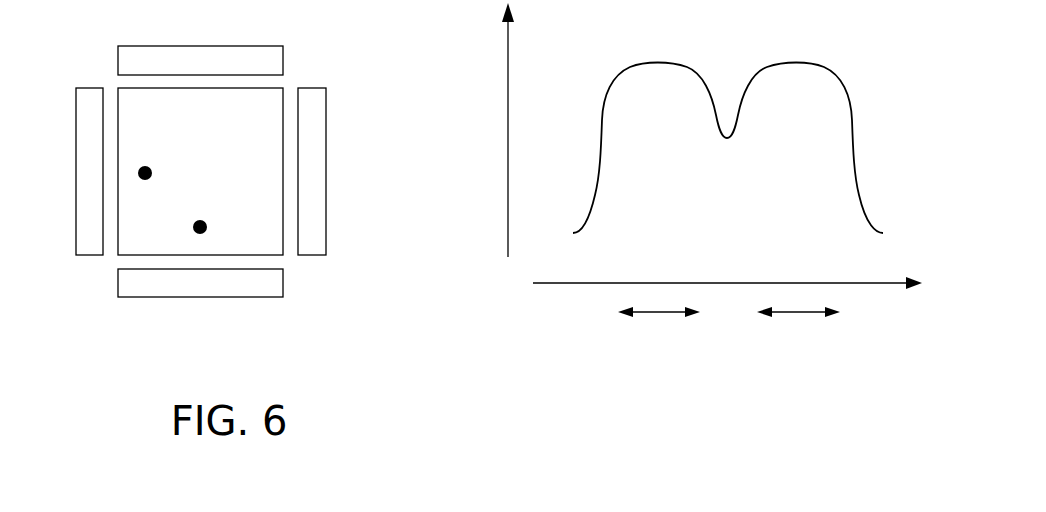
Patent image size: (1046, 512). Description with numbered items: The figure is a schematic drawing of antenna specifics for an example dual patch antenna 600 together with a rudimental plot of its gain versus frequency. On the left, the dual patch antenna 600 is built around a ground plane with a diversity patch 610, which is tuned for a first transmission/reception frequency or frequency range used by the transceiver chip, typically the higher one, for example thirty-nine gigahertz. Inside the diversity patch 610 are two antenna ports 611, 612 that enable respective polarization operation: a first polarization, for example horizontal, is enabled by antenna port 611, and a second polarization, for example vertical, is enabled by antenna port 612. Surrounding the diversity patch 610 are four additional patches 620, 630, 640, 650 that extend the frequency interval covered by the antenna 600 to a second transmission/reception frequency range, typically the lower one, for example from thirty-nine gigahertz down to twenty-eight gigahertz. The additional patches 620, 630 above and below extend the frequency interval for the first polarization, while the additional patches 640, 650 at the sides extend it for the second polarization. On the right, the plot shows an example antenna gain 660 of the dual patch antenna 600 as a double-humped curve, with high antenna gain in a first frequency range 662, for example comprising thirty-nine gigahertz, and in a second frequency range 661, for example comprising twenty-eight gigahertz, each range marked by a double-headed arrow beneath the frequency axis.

The dual patch antenna 600 is at (375, 102).
The ground plane with a diversity patch 610 is at (200, 171).
The antenna port 611 is at (152, 167).
The antenna port 612 is at (202, 220).
The additional patch 620 is at (200, 60).
The additional patch 630 is at (200, 283).
The additional patch 640 is at (89, 171).
The additional patch 650 is at (312, 171).
The antenna gain 660 is at (860, 187).
The second frequency range 661 is at (659, 302).
The first frequency range 662 is at (798, 302).